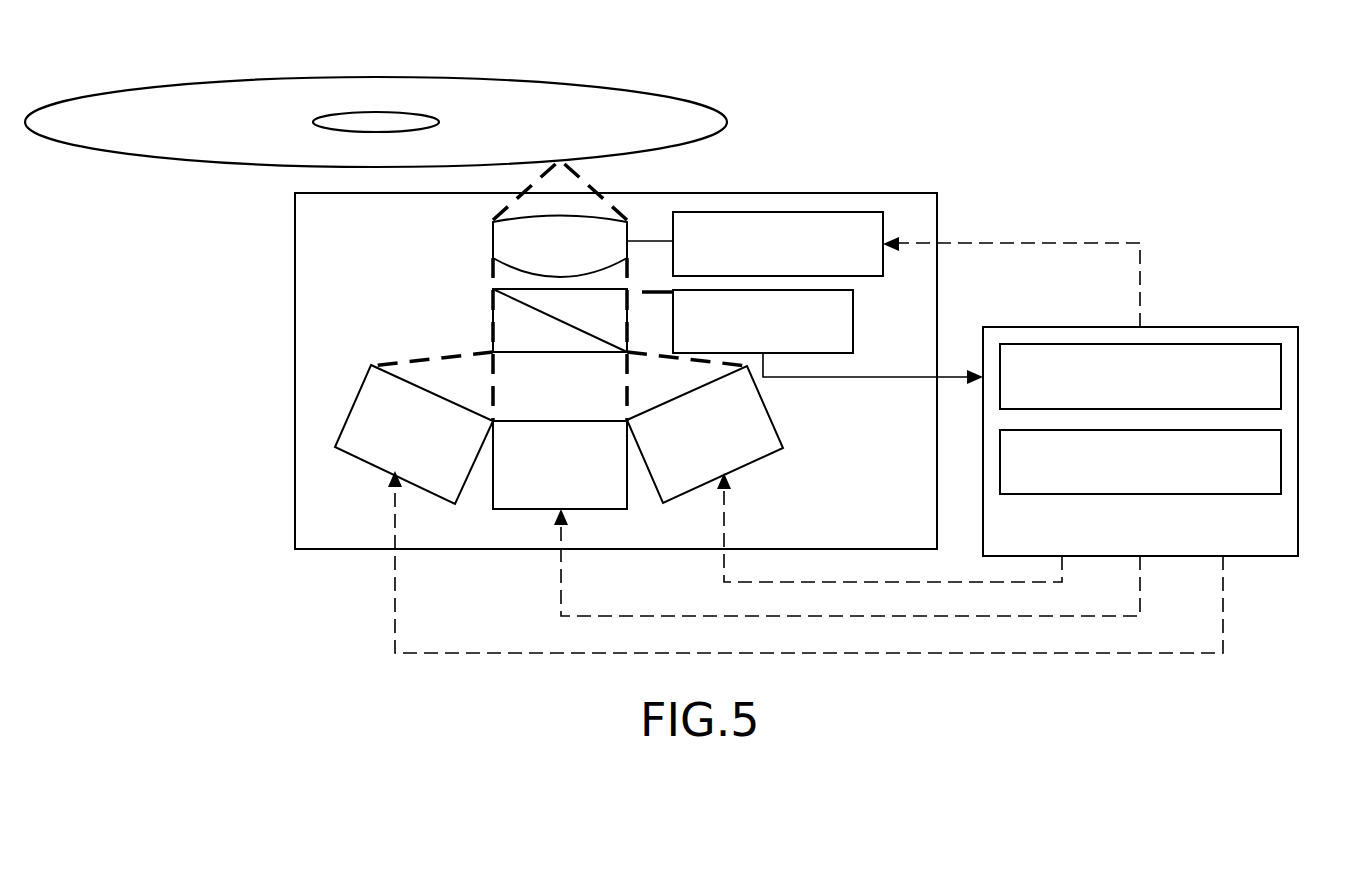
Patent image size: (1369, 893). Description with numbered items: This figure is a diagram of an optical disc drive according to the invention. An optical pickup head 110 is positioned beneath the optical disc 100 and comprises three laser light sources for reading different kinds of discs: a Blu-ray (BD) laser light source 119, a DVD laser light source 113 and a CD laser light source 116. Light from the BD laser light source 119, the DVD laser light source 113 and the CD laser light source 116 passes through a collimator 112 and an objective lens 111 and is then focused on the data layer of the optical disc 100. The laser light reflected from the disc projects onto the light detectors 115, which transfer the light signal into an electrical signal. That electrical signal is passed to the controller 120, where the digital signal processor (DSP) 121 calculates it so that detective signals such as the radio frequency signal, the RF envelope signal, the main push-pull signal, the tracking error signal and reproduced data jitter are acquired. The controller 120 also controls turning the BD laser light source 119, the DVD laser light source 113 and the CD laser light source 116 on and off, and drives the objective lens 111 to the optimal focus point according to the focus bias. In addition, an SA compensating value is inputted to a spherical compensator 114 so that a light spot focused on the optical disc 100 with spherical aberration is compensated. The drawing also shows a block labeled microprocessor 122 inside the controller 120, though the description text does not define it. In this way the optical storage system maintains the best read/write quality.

The optical disc 100 is at (647, 112).
The optical pickup head 110 is at (312, 345).
The objective lens 111 is at (588, 232).
The collimator 112 is at (505, 337).
The DVD laser light source 113 is at (362, 442).
The spherical compensator 114 is at (813, 223).
The light detectors 115 is at (837, 333).
The CD laser light source 116 is at (762, 432).
The Blu-ray (BD) laser light source 119 is at (612, 480).
The controller 120 is at (1173, 428).
The digital signal processor (DSP) 121 is at (1190, 357).
The microprocessor 122 is at (1266, 470).